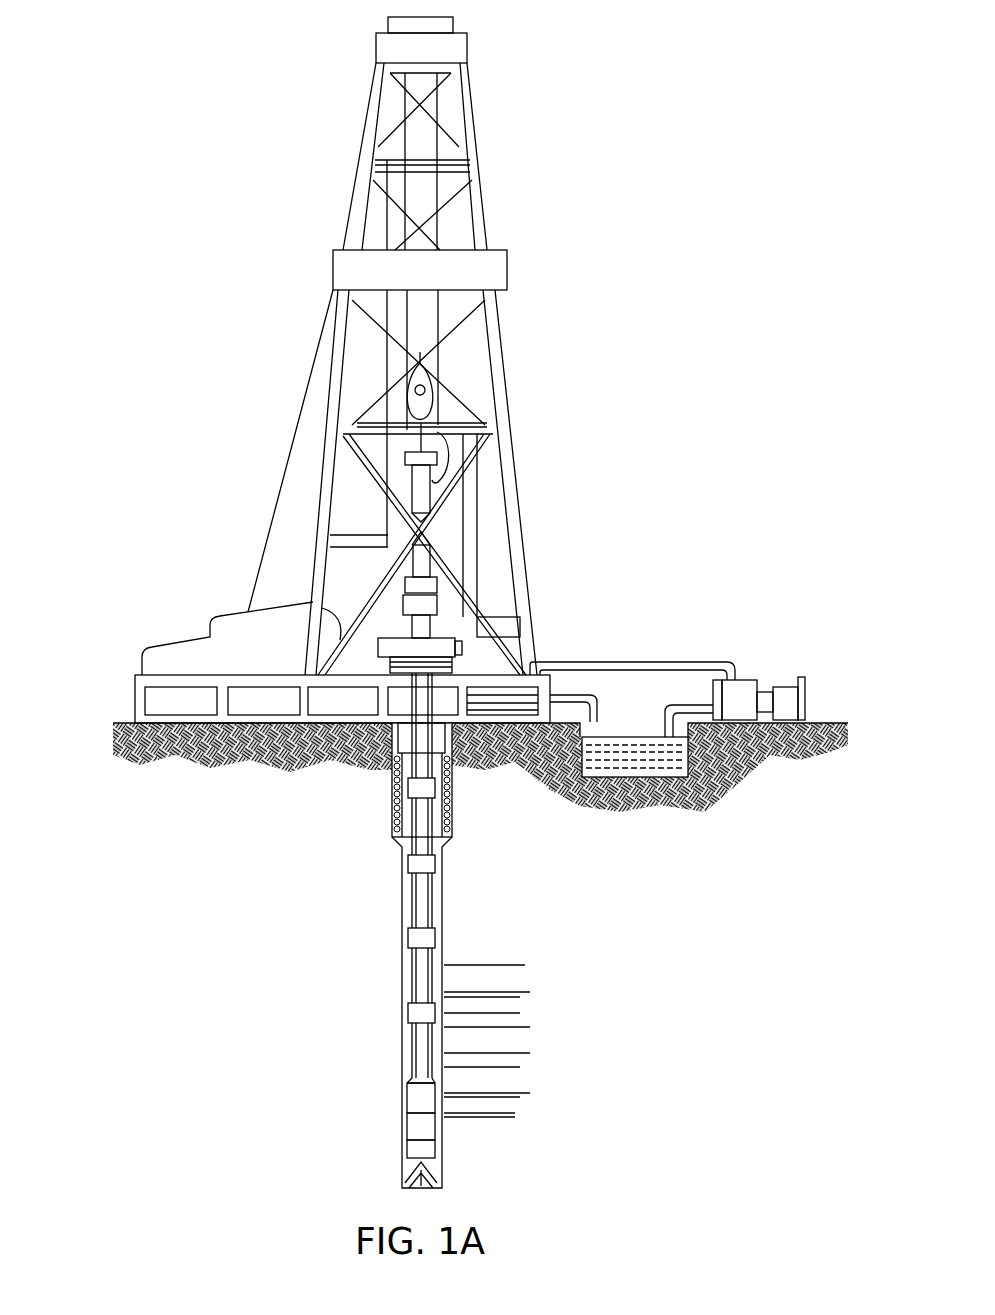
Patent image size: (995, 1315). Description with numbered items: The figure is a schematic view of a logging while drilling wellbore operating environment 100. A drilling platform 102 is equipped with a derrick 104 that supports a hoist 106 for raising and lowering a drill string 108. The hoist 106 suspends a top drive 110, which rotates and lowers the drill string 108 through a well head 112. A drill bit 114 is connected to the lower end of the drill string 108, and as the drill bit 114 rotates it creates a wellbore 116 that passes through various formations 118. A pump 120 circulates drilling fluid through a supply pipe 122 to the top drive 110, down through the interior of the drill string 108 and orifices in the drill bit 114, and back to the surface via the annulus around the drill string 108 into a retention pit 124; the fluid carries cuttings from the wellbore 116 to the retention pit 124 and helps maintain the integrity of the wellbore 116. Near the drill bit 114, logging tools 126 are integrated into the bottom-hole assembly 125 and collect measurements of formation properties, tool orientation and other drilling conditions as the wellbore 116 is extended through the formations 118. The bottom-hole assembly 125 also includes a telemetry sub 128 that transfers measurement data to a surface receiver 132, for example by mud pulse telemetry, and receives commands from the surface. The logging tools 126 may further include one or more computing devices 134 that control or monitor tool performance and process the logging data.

The logging while drilling wellbore operating environment 100 is at (298, 73).
The drilling platform 102 is at (135, 690).
The derrick 104 is at (481, 203).
The hoist 106 is at (443, 393).
The drill string 108 is at (433, 902).
The top drive 110 is at (437, 474).
The well head 112 is at (450, 630).
The drill bit 114 is at (440, 1177).
The wellbore 116 is at (442, 930).
The formations 118 is at (537, 962).
The pump 120 is at (742, 690).
The supply pipe 122 is at (633, 660).
The retention pit 124 is at (630, 780).
The bottom-hole assembly 125 is at (329, 1078).
The logging tools 126 is at (407, 1125).
The telemetry sub 128 is at (407, 1098).
The surface receiver 132 is at (450, 580).
The computing devices 134 is at (420, 1132).